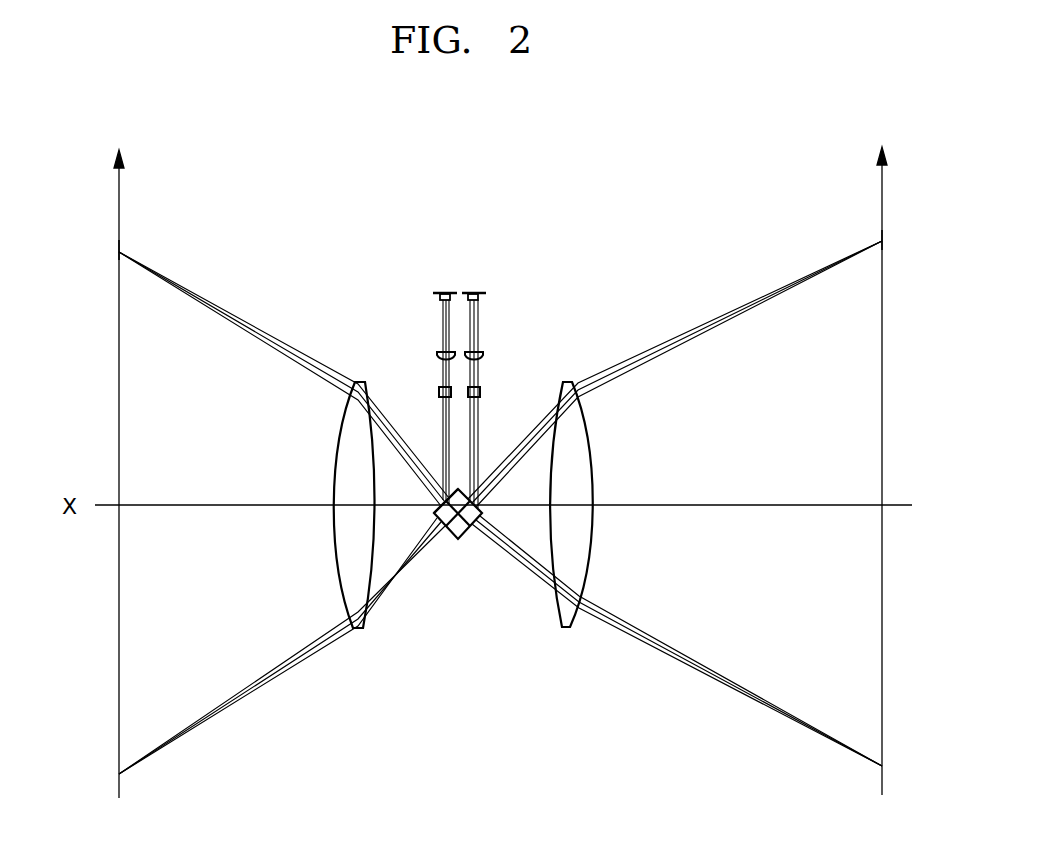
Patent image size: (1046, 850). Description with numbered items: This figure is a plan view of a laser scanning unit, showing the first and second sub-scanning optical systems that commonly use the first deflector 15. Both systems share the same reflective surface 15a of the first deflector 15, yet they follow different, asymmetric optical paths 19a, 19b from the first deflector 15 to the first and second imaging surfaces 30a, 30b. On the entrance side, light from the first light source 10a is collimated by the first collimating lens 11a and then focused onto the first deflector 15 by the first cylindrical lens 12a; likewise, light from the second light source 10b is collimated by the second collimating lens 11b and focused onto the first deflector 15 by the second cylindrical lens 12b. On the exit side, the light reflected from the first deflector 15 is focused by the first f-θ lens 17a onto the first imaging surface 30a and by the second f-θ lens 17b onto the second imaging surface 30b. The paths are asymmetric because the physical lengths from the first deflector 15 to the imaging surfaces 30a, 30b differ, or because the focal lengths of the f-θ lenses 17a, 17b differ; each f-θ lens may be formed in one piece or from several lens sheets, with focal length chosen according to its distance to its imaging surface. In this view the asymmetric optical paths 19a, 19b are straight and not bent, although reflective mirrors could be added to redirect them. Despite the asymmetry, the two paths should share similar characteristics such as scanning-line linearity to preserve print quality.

The first imaging surface 30a is at (119, 210).
The second imaging surface 30b is at (882, 268).
The asymmetric optical path 19a is at (223, 312).
The asymmetric optical path 19b is at (735, 314).
The first light source 10a is at (443, 293).
The second light source 10b is at (477, 293).
The first collimating lens 11a is at (437, 352).
The second collimating lens 11b is at (483, 352).
The first cylindrical lens 12a is at (439, 392).
The second cylindrical lens 12b is at (480, 392).
The first f-θ lens 17a is at (338, 453).
The second f-θ lens 17b is at (592, 455).
The first deflector 15 is at (467, 539).
The reflective surface 15a is at (447, 492).